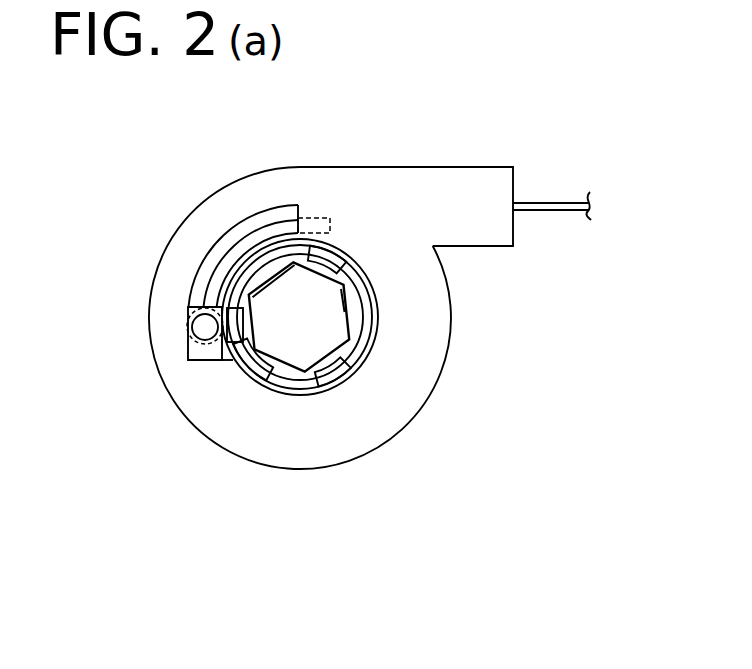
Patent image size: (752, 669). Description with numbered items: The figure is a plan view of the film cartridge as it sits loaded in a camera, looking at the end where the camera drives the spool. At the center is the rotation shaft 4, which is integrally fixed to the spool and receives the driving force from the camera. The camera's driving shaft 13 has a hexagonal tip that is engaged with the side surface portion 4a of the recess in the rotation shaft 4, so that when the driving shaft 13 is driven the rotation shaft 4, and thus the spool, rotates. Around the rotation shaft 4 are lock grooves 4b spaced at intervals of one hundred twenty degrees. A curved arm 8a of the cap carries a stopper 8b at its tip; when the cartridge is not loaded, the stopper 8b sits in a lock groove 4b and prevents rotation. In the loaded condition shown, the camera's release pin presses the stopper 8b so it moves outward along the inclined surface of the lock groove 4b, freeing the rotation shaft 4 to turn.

The rotation shaft 4 is at (365, 360).
The side surface portion 4a is at (273, 277).
The lock grooves 4b is at (222, 347).
The arm 8a is at (220, 243).
The stopper 8b is at (188, 332).
The driving shaft 13 is at (281, 364).